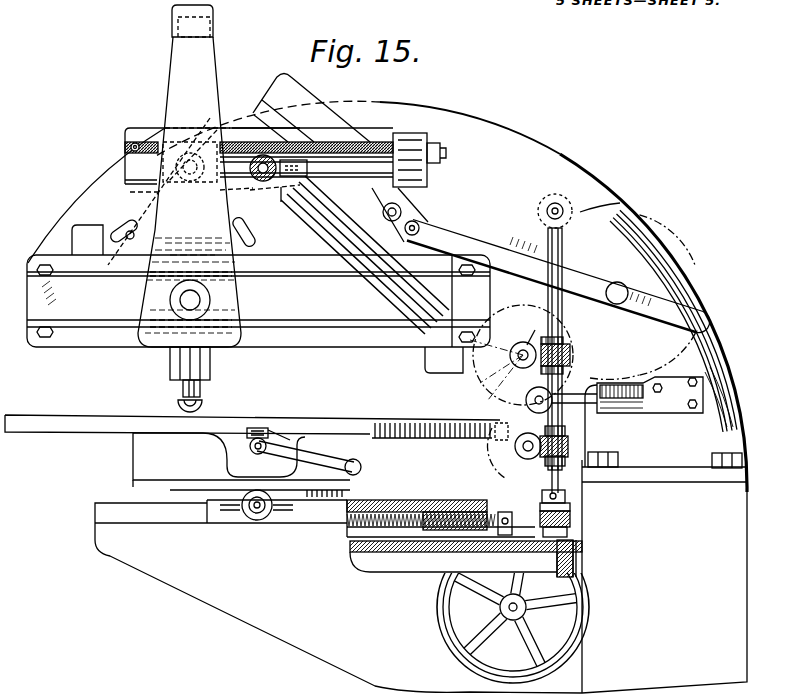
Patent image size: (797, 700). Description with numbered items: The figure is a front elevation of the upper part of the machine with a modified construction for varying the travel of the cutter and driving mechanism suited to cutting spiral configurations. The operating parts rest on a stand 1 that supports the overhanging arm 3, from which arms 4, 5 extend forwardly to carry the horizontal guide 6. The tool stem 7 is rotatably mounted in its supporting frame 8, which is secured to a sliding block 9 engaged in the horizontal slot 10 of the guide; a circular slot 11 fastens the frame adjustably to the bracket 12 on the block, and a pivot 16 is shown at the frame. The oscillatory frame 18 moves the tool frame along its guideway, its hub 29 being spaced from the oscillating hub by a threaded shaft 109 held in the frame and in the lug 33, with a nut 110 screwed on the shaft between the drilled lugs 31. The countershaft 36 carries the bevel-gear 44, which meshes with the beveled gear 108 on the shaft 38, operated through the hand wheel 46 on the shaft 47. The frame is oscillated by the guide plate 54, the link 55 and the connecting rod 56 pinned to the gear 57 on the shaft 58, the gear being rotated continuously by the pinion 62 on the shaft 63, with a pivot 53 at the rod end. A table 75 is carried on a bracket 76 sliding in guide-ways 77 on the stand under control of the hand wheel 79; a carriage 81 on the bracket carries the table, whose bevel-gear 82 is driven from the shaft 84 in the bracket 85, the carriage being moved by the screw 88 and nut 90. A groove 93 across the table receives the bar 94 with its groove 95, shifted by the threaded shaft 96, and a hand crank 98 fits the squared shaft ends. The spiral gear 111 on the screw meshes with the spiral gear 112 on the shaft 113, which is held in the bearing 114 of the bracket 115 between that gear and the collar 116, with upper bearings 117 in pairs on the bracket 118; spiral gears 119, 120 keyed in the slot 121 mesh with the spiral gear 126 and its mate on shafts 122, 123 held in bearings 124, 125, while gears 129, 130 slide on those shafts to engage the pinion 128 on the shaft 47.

The stand 1 is at (421, 572).
The overhanging arm 3 is at (387, 122).
The arm 4 is at (58, 244).
The arm 5 is at (426, 365).
The guide 6 is at (108, 333).
The tool stem 7 is at (180, 383).
The supporting frame 8 is at (178, 84).
The sliding block 9 is at (140, 293).
The horizontal slot 10 is at (324, 322).
The circular slot 11 is at (130, 230).
The bracket 12 is at (266, 240).
The pivot 16 is at (170, 300).
The oscillatory frame 18 is at (143, 131).
The hub 29 is at (140, 187).
The drilled lugs 31 is at (210, 138).
The stop collar / lug 33 is at (127, 148).
The countershaft 36 is at (349, 192).
The shaft 38 is at (268, 203).
The bevel-gear 44 is at (306, 192).
The hand wheel 46 is at (598, 377).
The shaft 47 is at (561, 397).
The pivot roller 53 is at (420, 228).
The guide plate 54 is at (305, 118).
The link 55 is at (401, 212).
The connecting rod 56 is at (510, 255).
The gear 57 is at (692, 271).
The shaft 58 is at (626, 290).
The pinion 62 is at (552, 194).
The shaft 63 is at (565, 207).
The table 75 is at (35, 432).
The bracket 76 is at (168, 581).
The guide-ways 77 is at (578, 558).
The hand wheel 79 is at (440, 622).
The carriage 81 is at (388, 503).
The bevel-gear 82 is at (150, 487).
The shaft 84 is at (262, 516).
The bracket 85 is at (243, 520).
The screw 88 is at (367, 556).
The nut 90 is at (435, 541).
The groove 93 is at (238, 440).
The bar 94 is at (295, 425).
The groove 95 is at (262, 428).
The threaded shaft 96 is at (250, 450).
The hand crank 98 is at (362, 466).
The beveled gear 108 is at (248, 168).
The threaded shaft 109 is at (408, 133).
The nut 110 is at (205, 128).
The spiral gear 111 is at (570, 536).
The spiral gear 112 is at (572, 522).
The shaft 113 is at (563, 262).
The bearing 114 is at (572, 507).
The bracket 115 is at (548, 478).
The collar 116 is at (542, 499).
The bearings 117 is at (560, 338).
The bracket 118 is at (652, 413).
The spiral gear 119 is at (572, 448).
The spiral gear 120 is at (570, 347).
The slot 121 is at (563, 246).
The shaft 122 is at (514, 462).
The shaft 123 is at (522, 341).
The bearing 124 is at (514, 447).
The bearing 125 is at (483, 384).
The spiral gear 126 is at (510, 478).
The pinion 128 is at (490, 423).
The gear 129 is at (540, 480).
The gear 130 is at (535, 330).